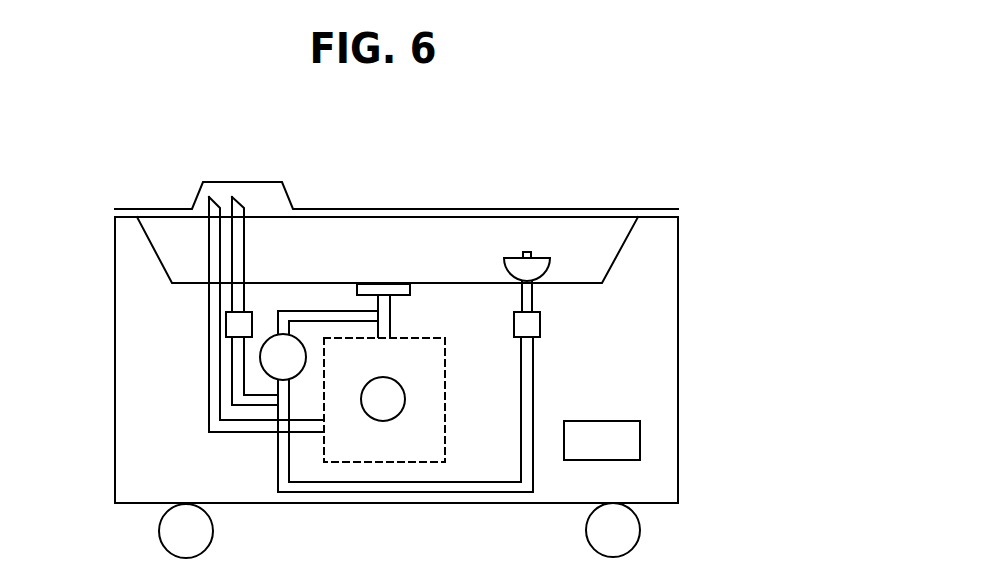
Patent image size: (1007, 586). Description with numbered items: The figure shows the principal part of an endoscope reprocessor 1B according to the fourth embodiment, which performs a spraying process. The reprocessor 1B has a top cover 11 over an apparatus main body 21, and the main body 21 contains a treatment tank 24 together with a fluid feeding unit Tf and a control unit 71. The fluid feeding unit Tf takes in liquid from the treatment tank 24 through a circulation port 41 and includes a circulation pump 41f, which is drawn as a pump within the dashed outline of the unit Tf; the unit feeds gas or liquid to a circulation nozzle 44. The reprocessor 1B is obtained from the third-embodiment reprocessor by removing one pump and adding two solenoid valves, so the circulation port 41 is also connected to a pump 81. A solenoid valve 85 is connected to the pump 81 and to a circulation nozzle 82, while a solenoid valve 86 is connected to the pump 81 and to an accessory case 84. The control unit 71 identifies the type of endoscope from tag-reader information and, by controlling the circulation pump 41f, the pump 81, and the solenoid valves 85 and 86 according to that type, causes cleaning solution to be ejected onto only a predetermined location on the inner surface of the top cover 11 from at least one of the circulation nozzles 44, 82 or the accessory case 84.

The endoscope reprocessor 1B is at (640, 148).
The top cover 11 is at (390, 208).
The apparatus main body 21 is at (679, 277).
The treatment tank 24 is at (465, 255).
The circulation port 41 is at (385, 287).
The circulation pump 41f is at (385, 376).
The circulation nozzle 44 is at (217, 195).
The control unit 71 is at (604, 420).
The pump 81 is at (272, 334).
The circulation nozzle 82 is at (242, 195).
The accessory case 84 is at (548, 266).
The solenoid valve 85 is at (225, 311).
The solenoid valve 86 is at (541, 322).
The fluid feeding unit Tf is at (451, 449).